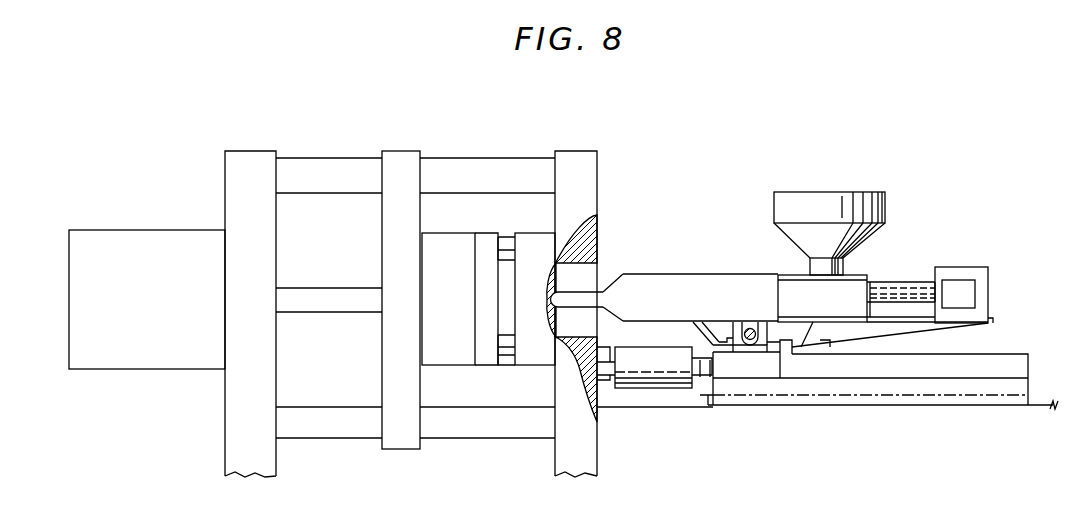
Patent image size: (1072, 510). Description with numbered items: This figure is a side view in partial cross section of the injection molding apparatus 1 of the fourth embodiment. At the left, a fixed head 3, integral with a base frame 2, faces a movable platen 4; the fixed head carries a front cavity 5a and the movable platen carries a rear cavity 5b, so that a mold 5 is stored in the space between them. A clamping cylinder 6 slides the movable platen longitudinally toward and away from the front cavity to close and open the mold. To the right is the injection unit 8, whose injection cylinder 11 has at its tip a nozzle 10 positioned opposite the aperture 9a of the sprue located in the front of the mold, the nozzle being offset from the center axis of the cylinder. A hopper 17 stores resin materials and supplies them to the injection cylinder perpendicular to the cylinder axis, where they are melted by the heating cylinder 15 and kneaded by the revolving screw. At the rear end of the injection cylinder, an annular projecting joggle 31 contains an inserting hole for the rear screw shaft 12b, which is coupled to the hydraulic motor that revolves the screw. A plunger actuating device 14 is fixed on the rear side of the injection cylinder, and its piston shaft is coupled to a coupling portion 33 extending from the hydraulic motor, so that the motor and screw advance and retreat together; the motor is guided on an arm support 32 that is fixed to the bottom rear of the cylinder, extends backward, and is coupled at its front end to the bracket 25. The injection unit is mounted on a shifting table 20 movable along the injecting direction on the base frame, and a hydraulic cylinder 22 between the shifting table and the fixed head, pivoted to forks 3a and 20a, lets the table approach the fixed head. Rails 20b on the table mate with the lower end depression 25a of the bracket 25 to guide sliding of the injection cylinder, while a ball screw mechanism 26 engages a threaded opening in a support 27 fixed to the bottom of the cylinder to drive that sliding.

The injection molding apparatus 1 is at (340, 133).
The base frame 2 is at (804, 472).
The fixed head 3 is at (572, 153).
The fork 3a is at (605, 382).
The movable platen 4 is at (403, 154).
The mold 5 is at (488, 301).
The front cavity 5a is at (528, 233).
The rear cavity 5b is at (463, 233).
The clamping cylinder 6 is at (163, 231).
The injection unit 8 is at (752, 208).
The aperture of the sprue 9a is at (550, 290).
The nozzle 10 is at (557, 290).
The injection cylinder 11 is at (614, 308).
The rear screw shaft 12b is at (910, 283).
The plunger actuating device 14 is at (792, 282).
The barrel 15 is at (727, 273).
The hopper 17 is at (835, 192).
The shifting table 20 is at (1018, 354).
The fork 20a is at (708, 385).
The rail 20b is at (700, 318).
The hydraulic cylinder 22 is at (655, 390).
The bracket 25 is at (703, 337).
The lower end depression 25a is at (727, 342).
The ball screw mechanism 26 is at (748, 332).
The support 27 is at (750, 345).
The annular projecting joggle 31 is at (870, 283).
The arm support 32 is at (923, 328).
The coupling portion 33 is at (957, 283).